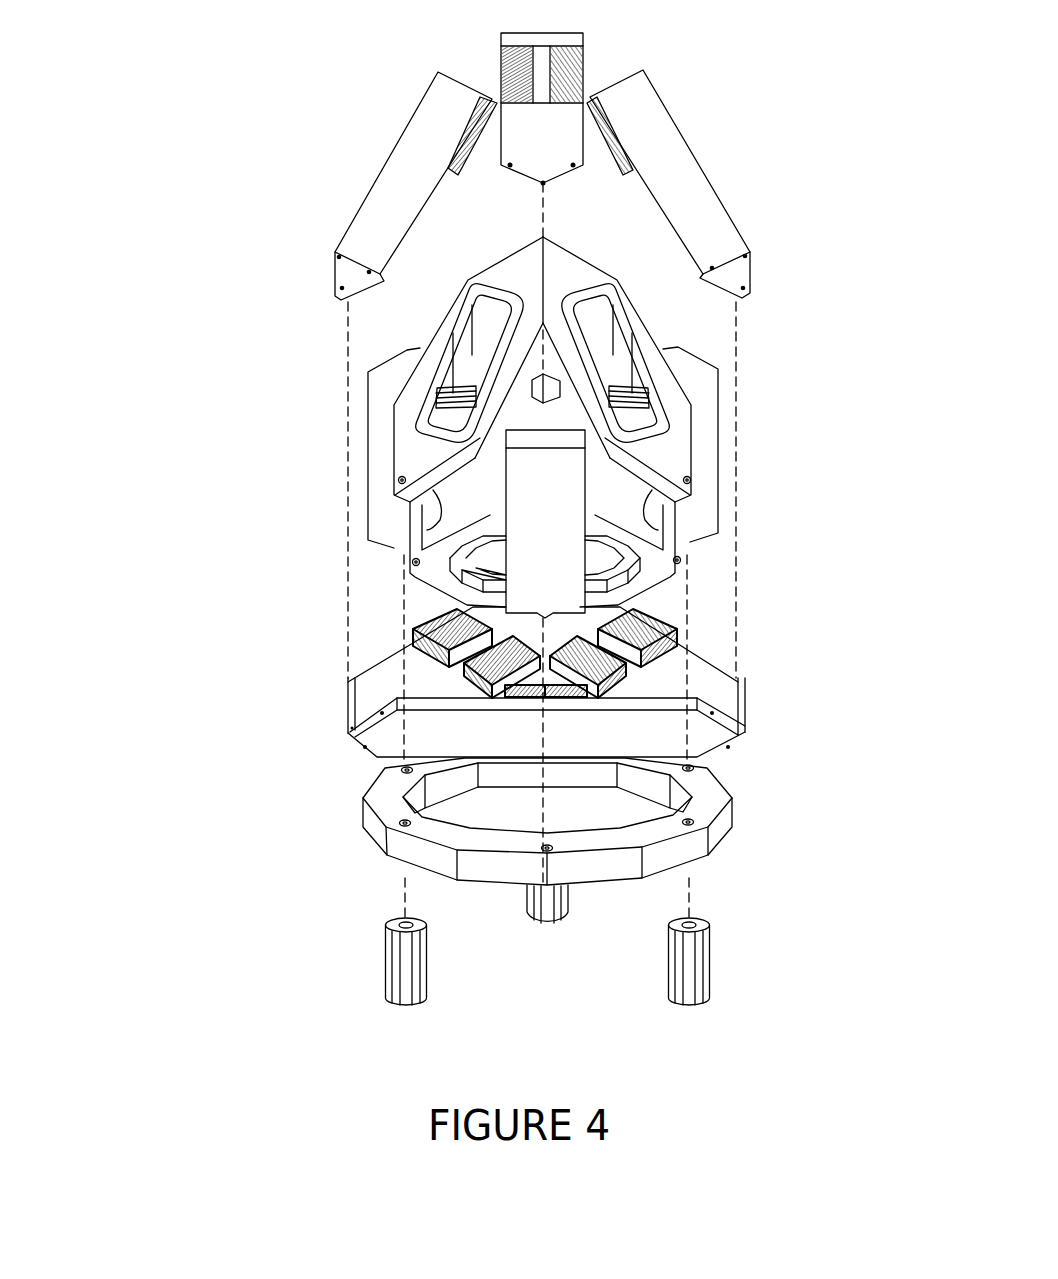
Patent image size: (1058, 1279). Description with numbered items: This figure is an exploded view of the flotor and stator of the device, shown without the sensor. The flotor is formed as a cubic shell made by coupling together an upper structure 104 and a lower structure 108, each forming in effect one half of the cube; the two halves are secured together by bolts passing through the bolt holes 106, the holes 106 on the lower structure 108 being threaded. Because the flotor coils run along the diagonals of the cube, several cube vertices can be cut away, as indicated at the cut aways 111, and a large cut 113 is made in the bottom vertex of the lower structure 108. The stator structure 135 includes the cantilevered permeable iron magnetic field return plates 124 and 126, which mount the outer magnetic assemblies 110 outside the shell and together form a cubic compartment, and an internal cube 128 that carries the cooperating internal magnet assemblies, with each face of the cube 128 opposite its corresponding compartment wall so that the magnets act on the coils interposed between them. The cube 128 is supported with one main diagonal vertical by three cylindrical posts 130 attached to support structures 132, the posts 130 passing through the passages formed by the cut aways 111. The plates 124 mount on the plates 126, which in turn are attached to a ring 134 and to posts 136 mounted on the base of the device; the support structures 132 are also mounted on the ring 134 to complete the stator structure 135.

The upper structure 104 is at (645, 333).
The bolt holes 106 is at (690, 481).
The lower structure 108 is at (648, 578).
The outer magnetic assemblies 110 is at (570, 69).
The cut aways 111 is at (497, 527).
The large cut in the bottom vertex 113 is at (465, 575).
The magnetic field return plates 124 is at (665, 145).
The magnetic field return plates 126 is at (710, 683).
The internal cube 128 is at (593, 480).
The cylindrical posts 130 is at (655, 403).
The support structures 132 is at (703, 387).
The ring 134 is at (707, 790).
The stator structure 135 is at (330, 282).
The posts 136 is at (703, 923).